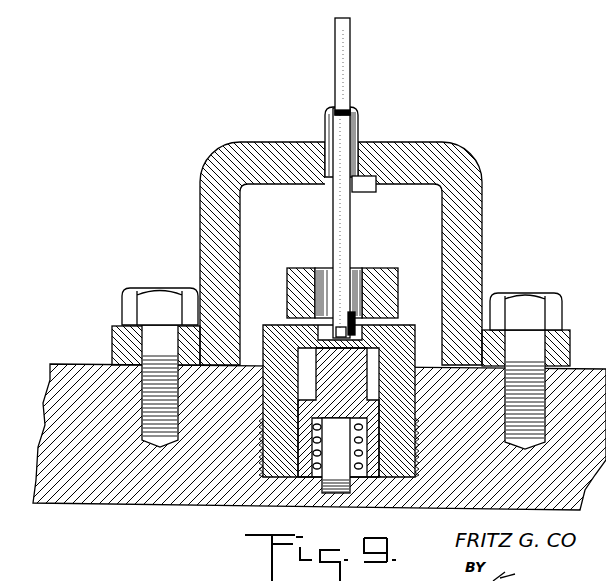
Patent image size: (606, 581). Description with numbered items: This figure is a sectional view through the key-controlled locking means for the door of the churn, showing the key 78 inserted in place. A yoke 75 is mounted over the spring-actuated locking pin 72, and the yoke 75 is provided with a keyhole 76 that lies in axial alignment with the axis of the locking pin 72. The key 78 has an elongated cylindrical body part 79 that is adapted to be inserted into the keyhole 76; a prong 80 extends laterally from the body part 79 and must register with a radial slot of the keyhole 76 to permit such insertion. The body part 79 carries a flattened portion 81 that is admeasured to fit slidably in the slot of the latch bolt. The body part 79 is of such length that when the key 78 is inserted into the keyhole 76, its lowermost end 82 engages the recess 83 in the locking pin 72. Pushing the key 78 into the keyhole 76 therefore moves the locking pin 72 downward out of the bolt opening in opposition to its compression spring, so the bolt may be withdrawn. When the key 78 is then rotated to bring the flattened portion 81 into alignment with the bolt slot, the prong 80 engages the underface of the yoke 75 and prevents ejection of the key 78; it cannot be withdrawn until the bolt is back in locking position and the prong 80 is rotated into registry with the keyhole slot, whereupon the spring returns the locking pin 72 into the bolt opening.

The locking pin 72 is at (348, 367).
The yoke 75 is at (470, 178).
The keyhole 76 is at (320, 163).
The key 78 is at (343, 52).
The cylindrical body part 79 is at (342, 127).
The prong 80 is at (363, 182).
The flattened portion 81 is at (335, 237).
The lowermost end 82 is at (380, 336).
The recess 83 is at (320, 340).